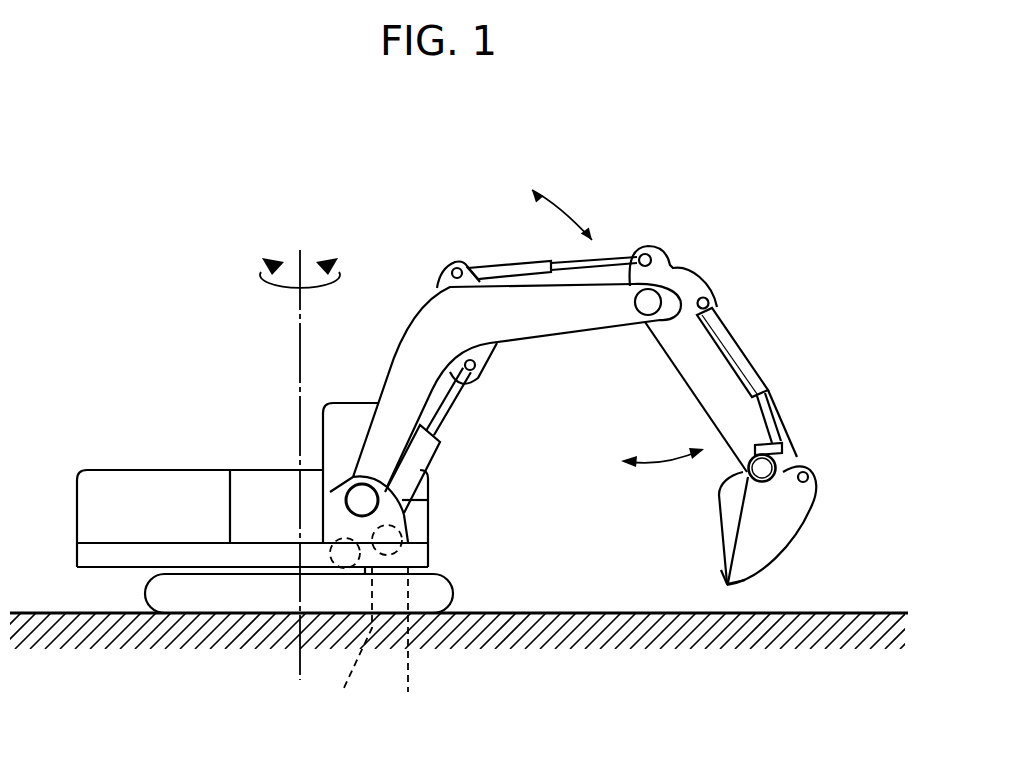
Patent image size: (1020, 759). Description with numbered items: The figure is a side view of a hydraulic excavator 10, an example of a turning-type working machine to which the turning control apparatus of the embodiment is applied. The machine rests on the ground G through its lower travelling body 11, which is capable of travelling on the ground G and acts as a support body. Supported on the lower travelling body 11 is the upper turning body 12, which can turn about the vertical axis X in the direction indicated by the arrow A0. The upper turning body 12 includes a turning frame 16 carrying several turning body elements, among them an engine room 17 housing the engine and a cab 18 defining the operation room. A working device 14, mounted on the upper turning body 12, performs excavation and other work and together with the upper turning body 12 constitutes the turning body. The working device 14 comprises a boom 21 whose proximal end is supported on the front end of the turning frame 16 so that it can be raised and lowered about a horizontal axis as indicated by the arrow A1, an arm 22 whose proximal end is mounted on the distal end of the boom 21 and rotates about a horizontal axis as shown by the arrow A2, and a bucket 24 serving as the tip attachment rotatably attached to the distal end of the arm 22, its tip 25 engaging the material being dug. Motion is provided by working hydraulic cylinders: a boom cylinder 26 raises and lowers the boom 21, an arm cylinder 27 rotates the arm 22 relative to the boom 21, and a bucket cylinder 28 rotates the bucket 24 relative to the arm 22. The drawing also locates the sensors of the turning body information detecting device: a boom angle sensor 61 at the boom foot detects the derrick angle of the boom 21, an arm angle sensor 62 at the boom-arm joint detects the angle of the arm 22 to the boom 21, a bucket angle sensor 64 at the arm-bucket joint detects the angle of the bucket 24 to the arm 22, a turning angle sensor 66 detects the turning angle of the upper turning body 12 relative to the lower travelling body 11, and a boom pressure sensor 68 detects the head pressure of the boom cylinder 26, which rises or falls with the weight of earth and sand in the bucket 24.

The hydraulic excavator 10 is at (148, 352).
The lower travelling body 11 is at (462, 576).
The upper turning body 12 is at (290, 370).
The working device 14 is at (412, 257).
The turning frame 16 is at (100, 565).
The engine room 17 is at (130, 480).
The cab 18 is at (357, 417).
The boom 21 is at (412, 330).
The arm 22 is at (706, 406).
The bucket 24 is at (778, 537).
The bucket cutting edge 25 is at (722, 585).
The boom cylinder 26 is at (422, 430).
The arm cylinder 27 is at (512, 267).
The bucket cylinder 28 is at (733, 355).
The boom angle sensor 61 is at (362, 501).
The arm angle sensor 62 is at (648, 303).
The bucket angle sensor 64 is at (718, 500).
The turning angle sensor 66 is at (399, 623).
The boom pressure sensor 68 is at (349, 629).
The arrow indicating turning direction A0 is at (260, 273).
The arrow indicating boom rotation A1 is at (567, 205).
The arrow indicating arm rotation A2 is at (650, 462).
The vertical axis X is at (298, 398).
The ground G is at (865, 612).